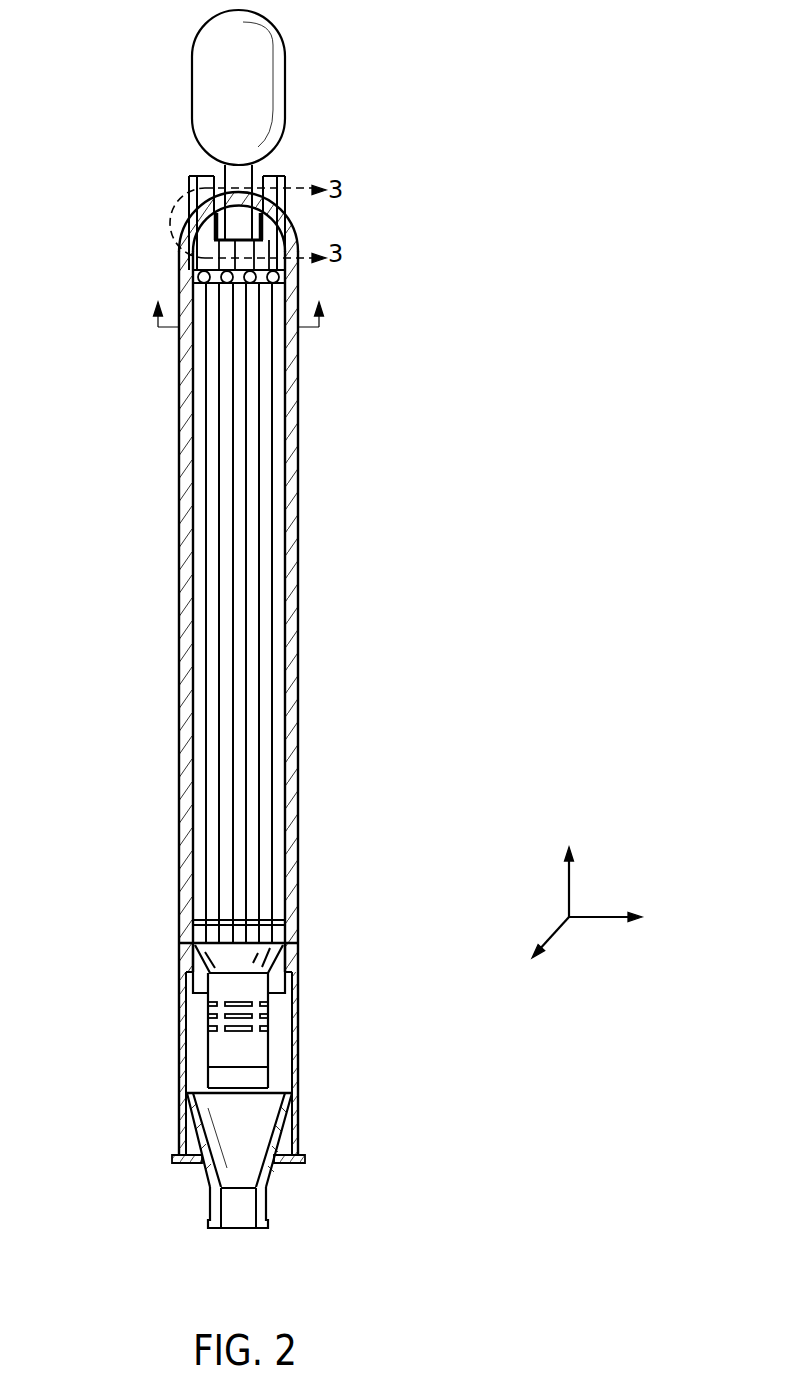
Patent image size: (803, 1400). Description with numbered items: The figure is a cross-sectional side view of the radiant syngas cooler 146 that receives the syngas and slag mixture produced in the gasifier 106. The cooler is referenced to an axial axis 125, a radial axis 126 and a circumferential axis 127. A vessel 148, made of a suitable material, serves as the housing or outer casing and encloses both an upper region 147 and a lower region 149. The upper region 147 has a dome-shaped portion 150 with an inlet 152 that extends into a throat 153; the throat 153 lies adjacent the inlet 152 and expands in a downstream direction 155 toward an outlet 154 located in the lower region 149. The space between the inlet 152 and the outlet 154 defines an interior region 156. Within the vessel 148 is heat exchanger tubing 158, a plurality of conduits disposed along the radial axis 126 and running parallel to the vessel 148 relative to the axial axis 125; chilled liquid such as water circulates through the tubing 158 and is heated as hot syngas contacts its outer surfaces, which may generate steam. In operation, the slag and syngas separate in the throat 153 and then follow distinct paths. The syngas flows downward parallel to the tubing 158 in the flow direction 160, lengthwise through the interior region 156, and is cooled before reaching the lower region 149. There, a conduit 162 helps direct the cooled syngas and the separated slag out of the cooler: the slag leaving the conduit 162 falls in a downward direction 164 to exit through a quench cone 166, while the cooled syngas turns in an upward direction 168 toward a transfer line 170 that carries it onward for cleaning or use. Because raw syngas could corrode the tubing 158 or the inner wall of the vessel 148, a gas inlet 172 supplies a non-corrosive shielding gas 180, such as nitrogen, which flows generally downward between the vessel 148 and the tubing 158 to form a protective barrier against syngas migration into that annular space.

The gasifier 106 is at (273, 17).
The inlet 152 is at (240, 175).
The gas inlet 172 is at (162, 200).
The throat 153 is at (309, 221).
The dome-shaped portion 150 is at (163, 220).
The shielding gas 180 is at (167, 251).
The radiant syngas cooler 146 is at (176, 396).
The vessel 148 is at (292, 392).
The heat exchanger tubing 158 is at (210, 488).
The interior region 156 is at (275, 483).
The downstream direction 155 is at (352, 222).
The upper region 147 is at (325, 333).
The flow direction 160 is at (141, 705).
The lower region 149 is at (176, 970).
The transfer line 170 is at (336, 1037).
The conduit 162 is at (208, 1007).
The upward direction 168 is at (195, 1023).
The quench cone 166 is at (268, 1182).
The outlet 154 is at (230, 1203).
The downward direction 164 is at (239, 1240).
The axial axis 125 is at (570, 872).
The radial axis 126 is at (607, 920).
The circumferential axis 127 is at (545, 938).